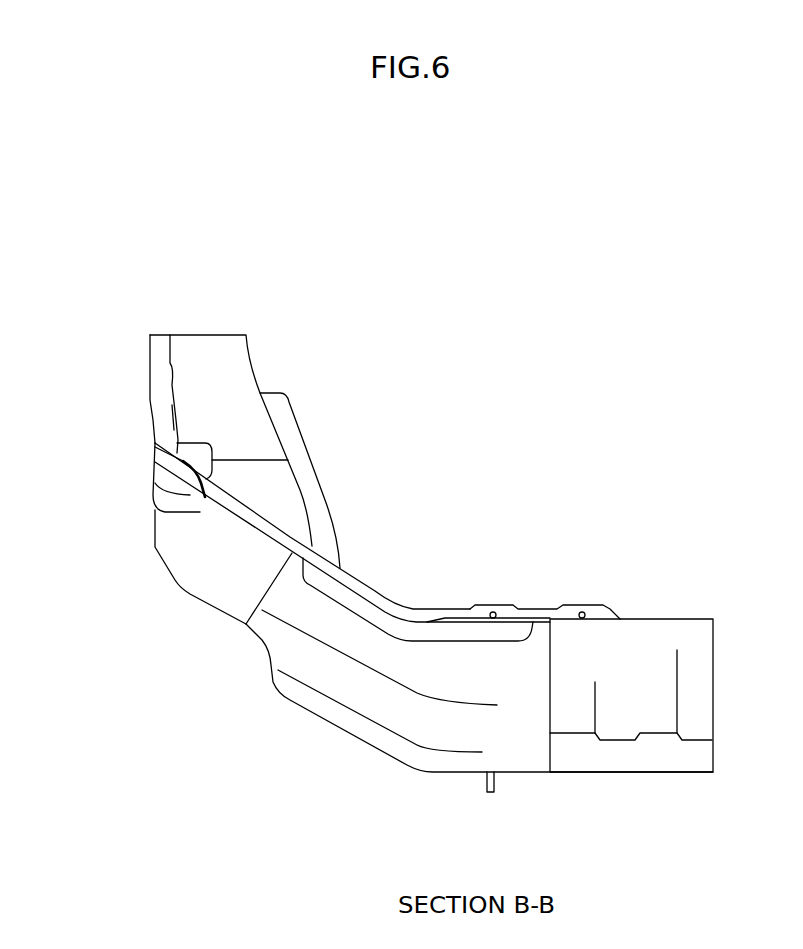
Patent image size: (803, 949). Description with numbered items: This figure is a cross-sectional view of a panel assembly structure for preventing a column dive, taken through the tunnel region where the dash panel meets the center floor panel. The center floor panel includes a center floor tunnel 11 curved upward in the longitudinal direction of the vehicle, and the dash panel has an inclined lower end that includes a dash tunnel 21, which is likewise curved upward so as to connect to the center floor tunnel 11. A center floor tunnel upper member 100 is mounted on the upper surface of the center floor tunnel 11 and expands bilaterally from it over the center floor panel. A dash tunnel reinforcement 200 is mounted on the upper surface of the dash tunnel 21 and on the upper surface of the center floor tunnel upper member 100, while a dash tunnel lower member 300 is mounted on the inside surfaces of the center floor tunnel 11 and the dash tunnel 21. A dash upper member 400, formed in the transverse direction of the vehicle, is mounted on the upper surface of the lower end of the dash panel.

The dash upper member 400 is at (178, 470).
The dash tunnel reinforcement 200 is at (277, 532).
The dash tunnel 21 is at (207, 563).
The dash tunnel lower member 300 is at (393, 713).
The center floor tunnel upper member 100 is at (593, 607).
The center floor tunnel 11 is at (630, 692).